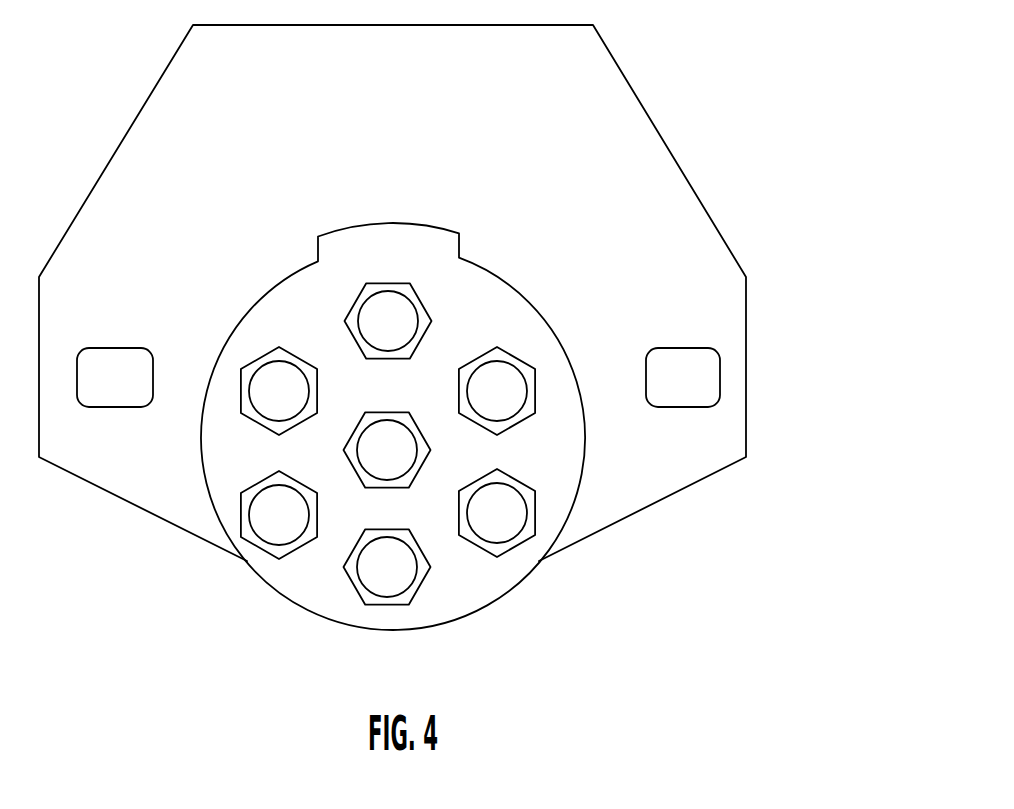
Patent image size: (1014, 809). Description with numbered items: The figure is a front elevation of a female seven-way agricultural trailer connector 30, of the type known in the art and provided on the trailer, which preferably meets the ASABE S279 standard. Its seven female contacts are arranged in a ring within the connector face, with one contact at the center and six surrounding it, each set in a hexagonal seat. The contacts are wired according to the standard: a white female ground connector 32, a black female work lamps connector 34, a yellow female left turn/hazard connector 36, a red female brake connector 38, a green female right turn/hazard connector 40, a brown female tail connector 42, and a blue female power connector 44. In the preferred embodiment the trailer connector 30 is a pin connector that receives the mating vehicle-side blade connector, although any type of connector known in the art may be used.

The trailer connector 30 is at (705, 147).
The white female ground connector 32 is at (412, 318).
The black female work lamps connector 34 is at (295, 397).
The yellow female left turn/hazard connector 36 is at (283, 520).
The red female brake connector 38 is at (382, 583).
The green female right turn/hazard connector 40 is at (493, 508).
The brown female tail connector 42 is at (505, 398).
The blue female power connector 44 is at (398, 453).